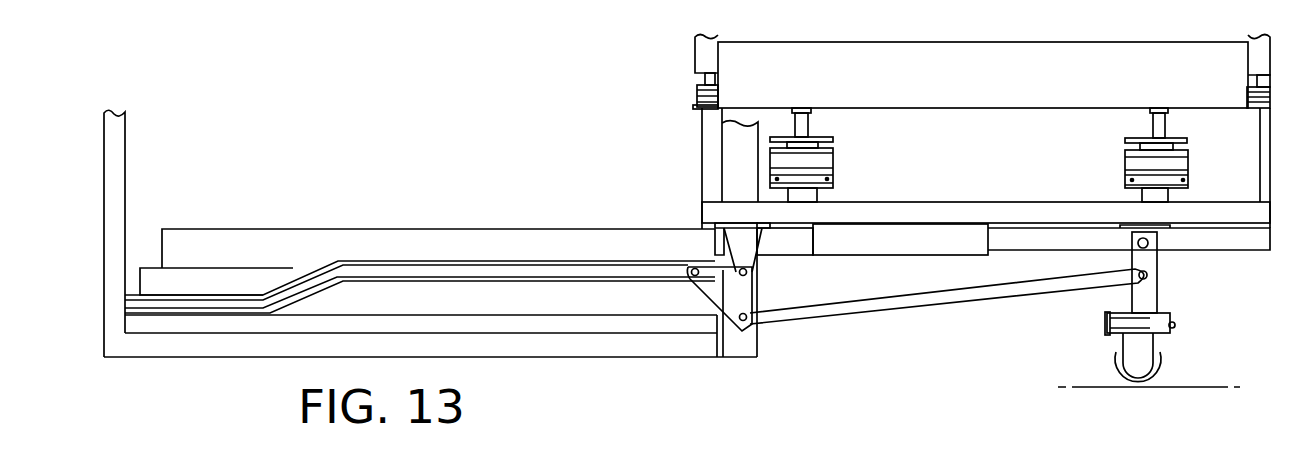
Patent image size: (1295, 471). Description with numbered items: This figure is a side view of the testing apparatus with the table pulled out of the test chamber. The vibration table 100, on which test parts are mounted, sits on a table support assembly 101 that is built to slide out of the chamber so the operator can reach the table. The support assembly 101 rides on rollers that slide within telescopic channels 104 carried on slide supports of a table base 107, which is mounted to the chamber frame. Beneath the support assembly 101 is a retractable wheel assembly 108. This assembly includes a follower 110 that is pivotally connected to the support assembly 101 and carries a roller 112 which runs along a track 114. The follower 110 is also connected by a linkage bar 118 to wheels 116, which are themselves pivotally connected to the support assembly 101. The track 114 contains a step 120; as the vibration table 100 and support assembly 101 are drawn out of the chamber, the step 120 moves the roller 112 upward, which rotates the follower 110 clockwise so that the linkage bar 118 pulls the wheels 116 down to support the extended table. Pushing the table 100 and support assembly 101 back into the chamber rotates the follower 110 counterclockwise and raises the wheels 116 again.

The vibration table 100 is at (975, 42).
The table support assembly 101 is at (907, 212).
The telescopic channels 104 is at (823, 240).
The table base 107 is at (152, 272).
The retractable wheel assembly 108 is at (1183, 310).
The follower 110 is at (723, 287).
The roller 112 is at (693, 270).
The track 114 is at (363, 268).
The wheels 116 is at (1153, 370).
The linkage bar 118 is at (922, 300).
The step 120 is at (297, 288).